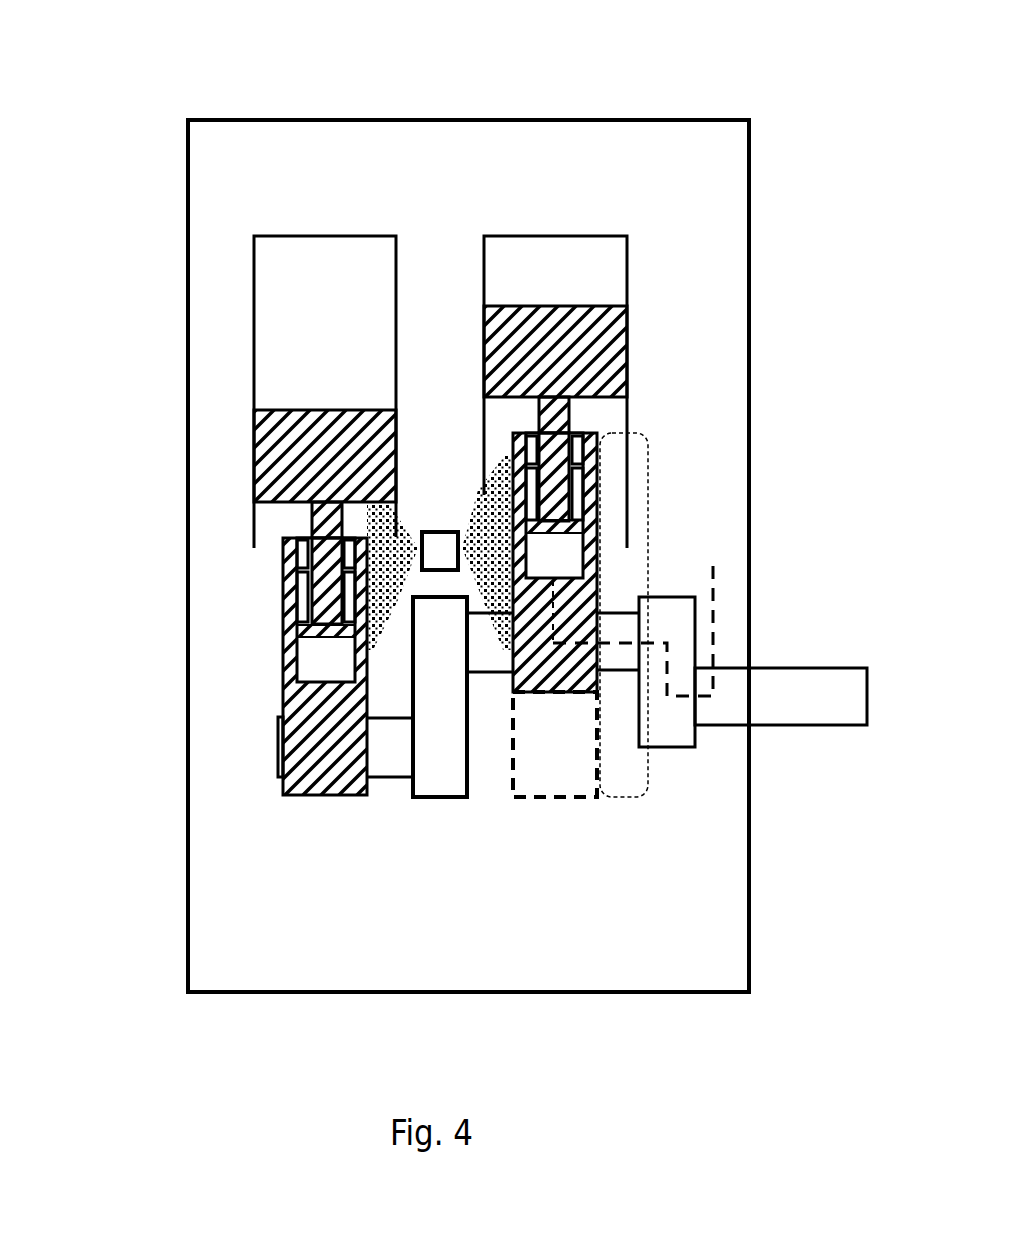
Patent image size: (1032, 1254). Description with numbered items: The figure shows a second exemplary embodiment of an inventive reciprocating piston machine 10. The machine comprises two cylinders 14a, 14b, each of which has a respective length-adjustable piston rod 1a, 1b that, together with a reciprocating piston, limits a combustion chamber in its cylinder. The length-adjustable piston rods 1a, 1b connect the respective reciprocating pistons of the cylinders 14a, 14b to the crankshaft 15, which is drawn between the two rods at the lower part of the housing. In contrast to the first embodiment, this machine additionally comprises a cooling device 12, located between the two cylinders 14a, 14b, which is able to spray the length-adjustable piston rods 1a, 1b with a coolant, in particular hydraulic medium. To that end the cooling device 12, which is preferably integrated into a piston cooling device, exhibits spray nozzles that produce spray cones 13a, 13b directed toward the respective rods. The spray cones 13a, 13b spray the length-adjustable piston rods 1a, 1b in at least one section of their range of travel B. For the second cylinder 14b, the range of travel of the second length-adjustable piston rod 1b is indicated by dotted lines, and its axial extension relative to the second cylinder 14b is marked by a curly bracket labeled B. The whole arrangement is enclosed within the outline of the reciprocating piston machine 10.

The reciprocating piston machine 10 is at (765, 236).
The first cylinder 14a is at (254, 317).
The second cylinder 14b is at (627, 260).
The first spray cone 13a is at (387, 600).
The second spray cone 13b is at (498, 497).
The cooling device 12 is at (443, 548).
The first length-adjustable piston rod 1a is at (272, 638).
The second length-adjustable piston rod 1b is at (605, 465).
The crankshaft 15 is at (467, 740).
The range of travel B is at (648, 500).